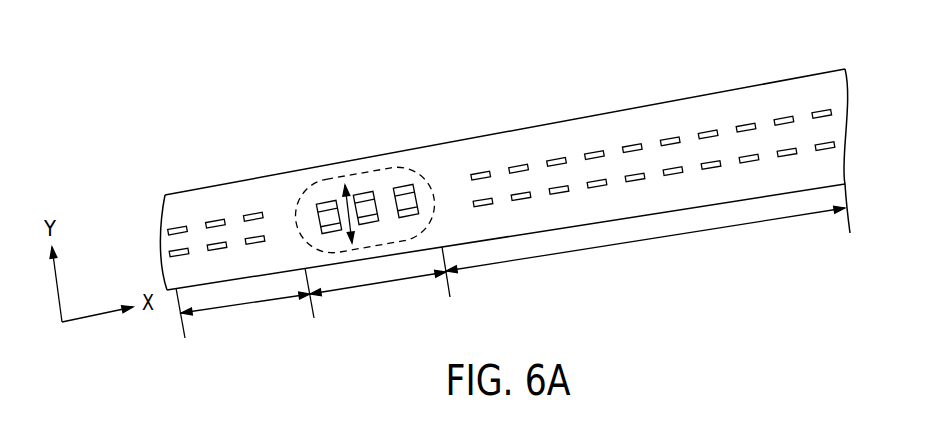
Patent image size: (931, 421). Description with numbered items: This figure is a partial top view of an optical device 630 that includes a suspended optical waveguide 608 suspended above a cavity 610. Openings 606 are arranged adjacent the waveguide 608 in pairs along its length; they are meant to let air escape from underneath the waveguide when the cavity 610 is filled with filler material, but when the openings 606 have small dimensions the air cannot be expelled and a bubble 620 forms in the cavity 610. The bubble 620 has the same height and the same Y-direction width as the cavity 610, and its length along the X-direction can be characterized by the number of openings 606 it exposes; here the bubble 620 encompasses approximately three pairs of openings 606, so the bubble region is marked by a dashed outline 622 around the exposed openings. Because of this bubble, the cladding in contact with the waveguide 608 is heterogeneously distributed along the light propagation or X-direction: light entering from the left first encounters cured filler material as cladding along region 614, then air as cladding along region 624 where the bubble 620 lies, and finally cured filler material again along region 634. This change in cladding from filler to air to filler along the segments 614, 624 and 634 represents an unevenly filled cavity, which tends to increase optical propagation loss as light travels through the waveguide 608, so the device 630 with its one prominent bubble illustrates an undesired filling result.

The optical device 630 is at (202, 92).
The suspended optical waveguide 608 is at (577, 170).
The openings 606 is at (632, 147).
The alignment region 622 is at (337, 207).
The cavity 610 is at (403, 198).
The bubble 620 is at (353, 180).
The region of the waveguide 614 is at (247, 307).
The region of the waveguide 624 is at (378, 283).
The region of the waveguide 634 is at (645, 240).